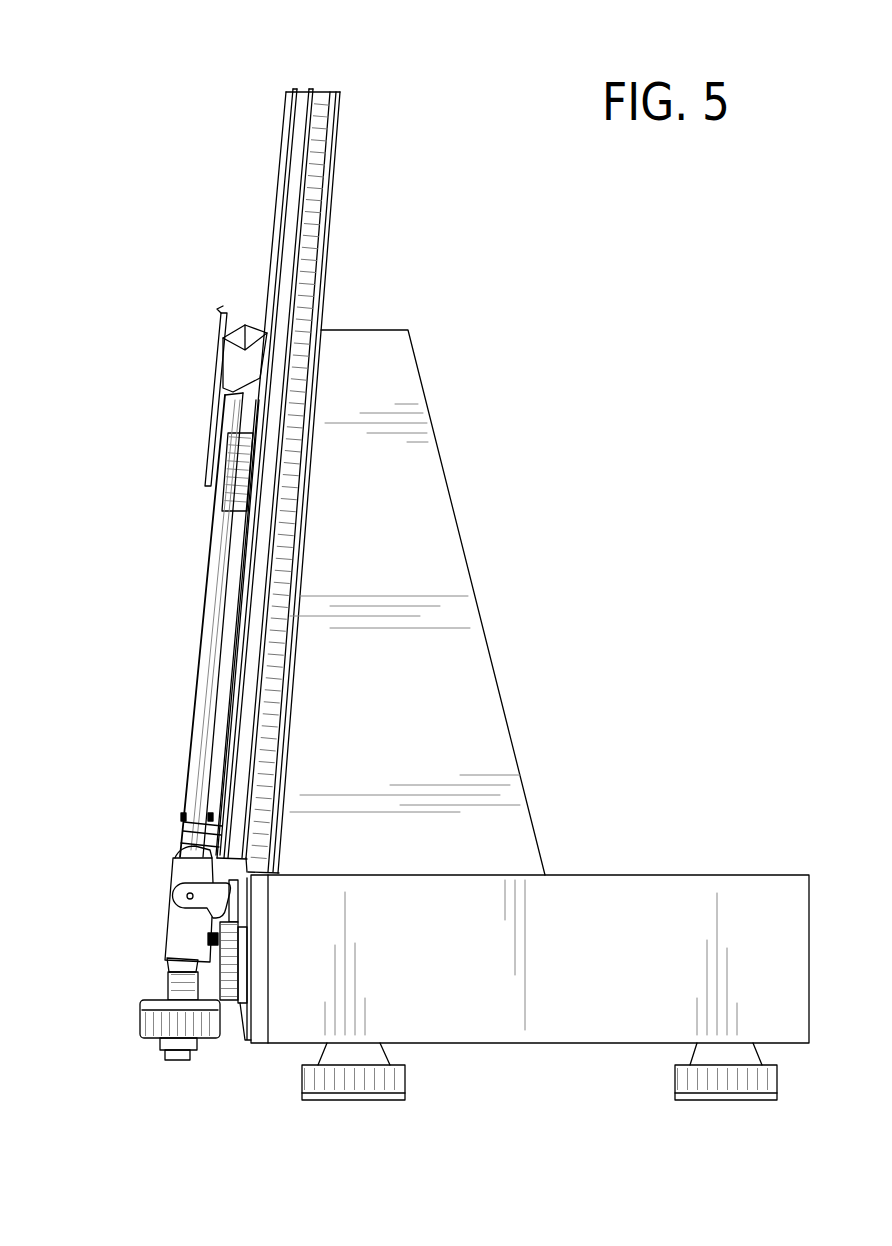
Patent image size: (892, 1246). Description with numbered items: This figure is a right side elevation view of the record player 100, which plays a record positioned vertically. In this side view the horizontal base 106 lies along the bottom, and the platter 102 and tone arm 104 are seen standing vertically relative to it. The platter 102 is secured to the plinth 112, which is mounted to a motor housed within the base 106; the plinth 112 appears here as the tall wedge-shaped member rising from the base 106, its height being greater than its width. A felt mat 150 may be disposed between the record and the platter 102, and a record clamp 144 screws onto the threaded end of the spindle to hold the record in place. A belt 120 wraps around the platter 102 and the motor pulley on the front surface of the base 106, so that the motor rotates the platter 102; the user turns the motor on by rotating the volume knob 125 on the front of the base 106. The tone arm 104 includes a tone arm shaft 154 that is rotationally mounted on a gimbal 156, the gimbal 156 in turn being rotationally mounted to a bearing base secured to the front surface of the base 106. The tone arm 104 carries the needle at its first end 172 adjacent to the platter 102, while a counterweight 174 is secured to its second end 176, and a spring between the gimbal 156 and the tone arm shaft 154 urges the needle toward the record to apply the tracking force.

The record player 100 is at (662, 366).
The platter 102 is at (324, 106).
The tone arm 104 is at (213, 600).
The base 106 is at (636, 971).
The plinth 112 is at (407, 544).
The belt 120 is at (192, 855).
The volume knob 125 is at (227, 950).
The record clamp 144 is at (236, 478).
The felt mat 150 is at (283, 130).
The tone arm shaft 154 is at (207, 708).
The gimbal 156 is at (172, 895).
The first end 172 is at (219, 331).
The counterweight 174 is at (152, 1013).
The second end 176 is at (177, 1060).